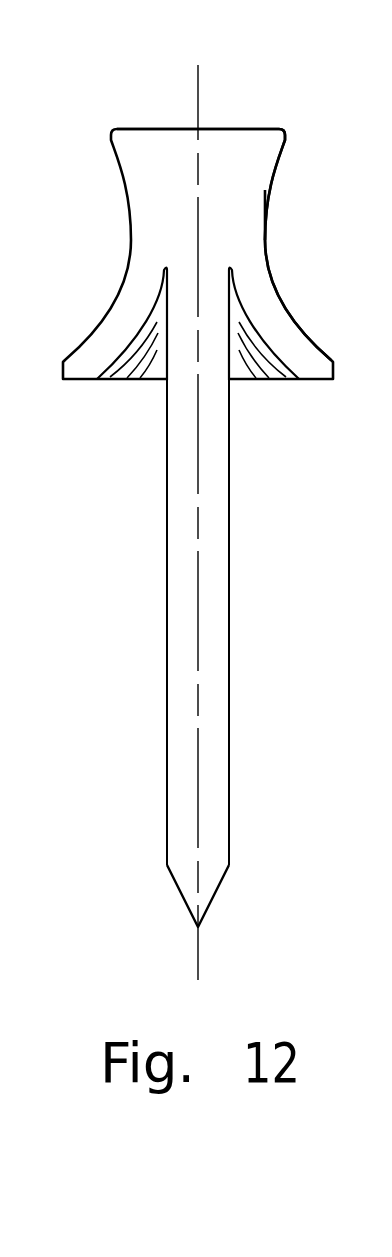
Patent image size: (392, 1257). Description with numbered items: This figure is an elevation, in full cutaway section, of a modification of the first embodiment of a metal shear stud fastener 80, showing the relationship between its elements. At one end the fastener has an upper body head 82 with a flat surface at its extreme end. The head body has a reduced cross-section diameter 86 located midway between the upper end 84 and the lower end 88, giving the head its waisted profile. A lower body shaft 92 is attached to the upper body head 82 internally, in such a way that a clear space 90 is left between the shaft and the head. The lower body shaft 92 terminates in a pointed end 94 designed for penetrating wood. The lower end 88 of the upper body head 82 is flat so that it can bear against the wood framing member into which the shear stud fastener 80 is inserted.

The metal shear stud fastener 80 is at (182, 219).
The upper body head 82 is at (198, 74).
The upper end 84 is at (319, 161).
The reduced cross-section diameter 86 is at (322, 262).
The lower end 88 is at (233, 314).
The clear space 90 is at (245, 393).
The lower body shaft 92 is at (259, 622).
The pointed end 94 is at (262, 902).